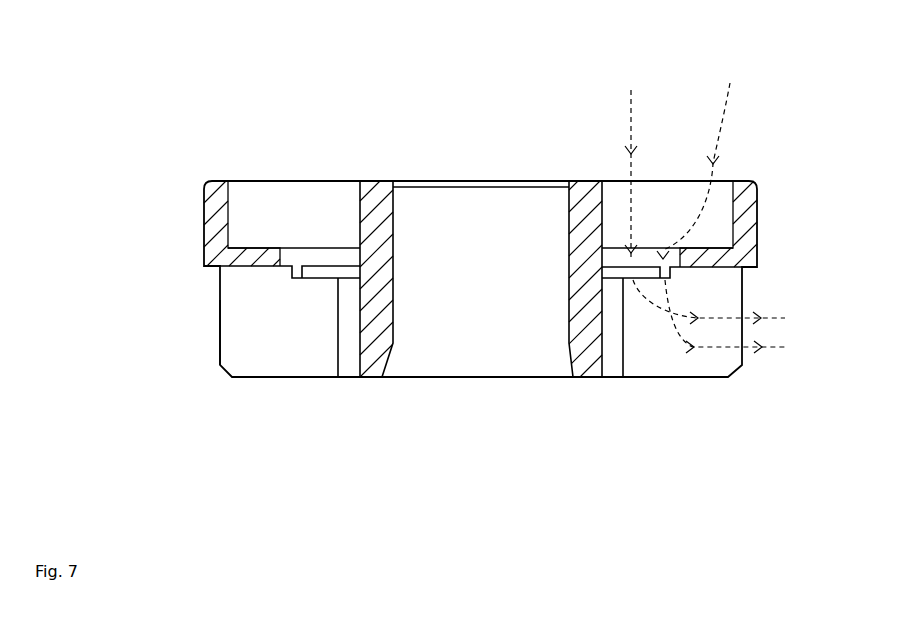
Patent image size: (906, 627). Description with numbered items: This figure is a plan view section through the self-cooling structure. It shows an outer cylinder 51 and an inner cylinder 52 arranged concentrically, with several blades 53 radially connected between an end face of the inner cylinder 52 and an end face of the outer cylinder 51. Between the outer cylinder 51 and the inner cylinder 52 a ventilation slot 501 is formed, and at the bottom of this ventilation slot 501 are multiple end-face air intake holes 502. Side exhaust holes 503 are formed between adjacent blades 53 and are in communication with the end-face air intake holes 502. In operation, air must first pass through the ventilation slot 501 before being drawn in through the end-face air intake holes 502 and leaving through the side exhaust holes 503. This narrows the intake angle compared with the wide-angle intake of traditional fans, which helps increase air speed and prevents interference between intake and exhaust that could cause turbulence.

The outer cylinder 51 is at (213, 203).
The ventilation slot 501 is at (270, 215).
The end-face air intake holes 502 is at (337, 257).
The side exhaust holes 503 is at (264, 313).
The inner cylinder 52 is at (395, 202).
The blades 53 is at (310, 357).